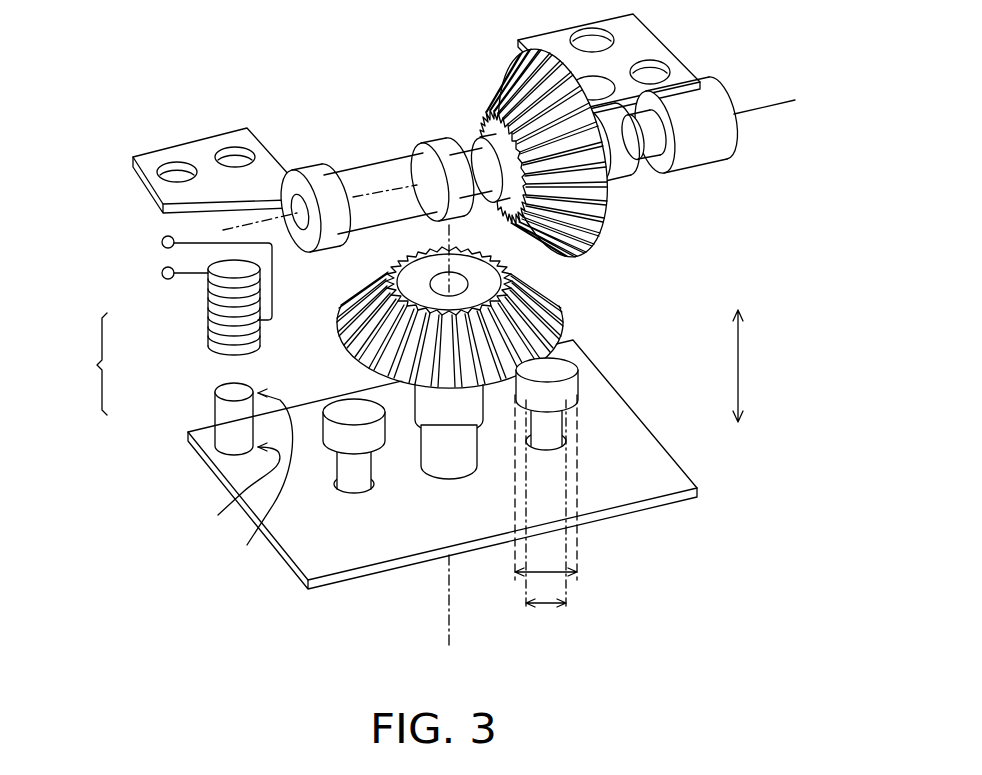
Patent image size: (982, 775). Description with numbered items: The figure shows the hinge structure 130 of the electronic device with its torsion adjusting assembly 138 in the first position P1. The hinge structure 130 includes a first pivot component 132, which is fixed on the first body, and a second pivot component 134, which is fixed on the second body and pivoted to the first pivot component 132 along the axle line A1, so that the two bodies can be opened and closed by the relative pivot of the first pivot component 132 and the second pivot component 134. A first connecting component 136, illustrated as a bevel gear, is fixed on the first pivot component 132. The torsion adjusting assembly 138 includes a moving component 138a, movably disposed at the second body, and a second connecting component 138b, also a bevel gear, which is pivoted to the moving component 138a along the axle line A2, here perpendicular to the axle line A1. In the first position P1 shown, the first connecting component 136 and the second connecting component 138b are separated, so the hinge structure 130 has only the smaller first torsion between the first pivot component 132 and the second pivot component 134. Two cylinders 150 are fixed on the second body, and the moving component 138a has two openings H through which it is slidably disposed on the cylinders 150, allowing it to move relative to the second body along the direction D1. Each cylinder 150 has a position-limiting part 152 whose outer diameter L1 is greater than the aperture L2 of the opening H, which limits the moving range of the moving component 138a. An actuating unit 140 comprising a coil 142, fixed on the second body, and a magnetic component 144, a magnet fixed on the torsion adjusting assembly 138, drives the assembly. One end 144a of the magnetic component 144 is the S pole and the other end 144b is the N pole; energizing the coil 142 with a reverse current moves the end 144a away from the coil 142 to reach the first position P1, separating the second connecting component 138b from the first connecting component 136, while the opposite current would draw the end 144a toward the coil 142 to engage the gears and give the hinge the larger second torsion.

The hinge structure 130 is at (310, 92).
The first pivot component 132 is at (700, 92).
The second pivot component 134 is at (383, 210).
The first connecting component 136 is at (490, 120).
The torsion adjusting assembly 138 is at (525, 298).
The moving component 138a is at (440, 450).
The second connecting component 138b is at (562, 337).
The actuating unit 140 is at (167, 345).
The coil 142 is at (205, 299).
The magnetic component 144 is at (214, 414).
The end of the magnetic component 144a is at (247, 479).
The other end of the magnetic component 144b is at (223, 491).
The cylinder 150 is at (548, 422).
The position-limiting part 152 is at (568, 390).
The opening H is at (562, 438).
The first position P1 is at (178, 446).
The axle line A1 is at (757, 104).
The axle line A2 is at (448, 627).
The direction D1 is at (740, 372).
The outer diameter of the position-limiting part L1 is at (546, 487).
The aperture of the opening L2 is at (546, 504).